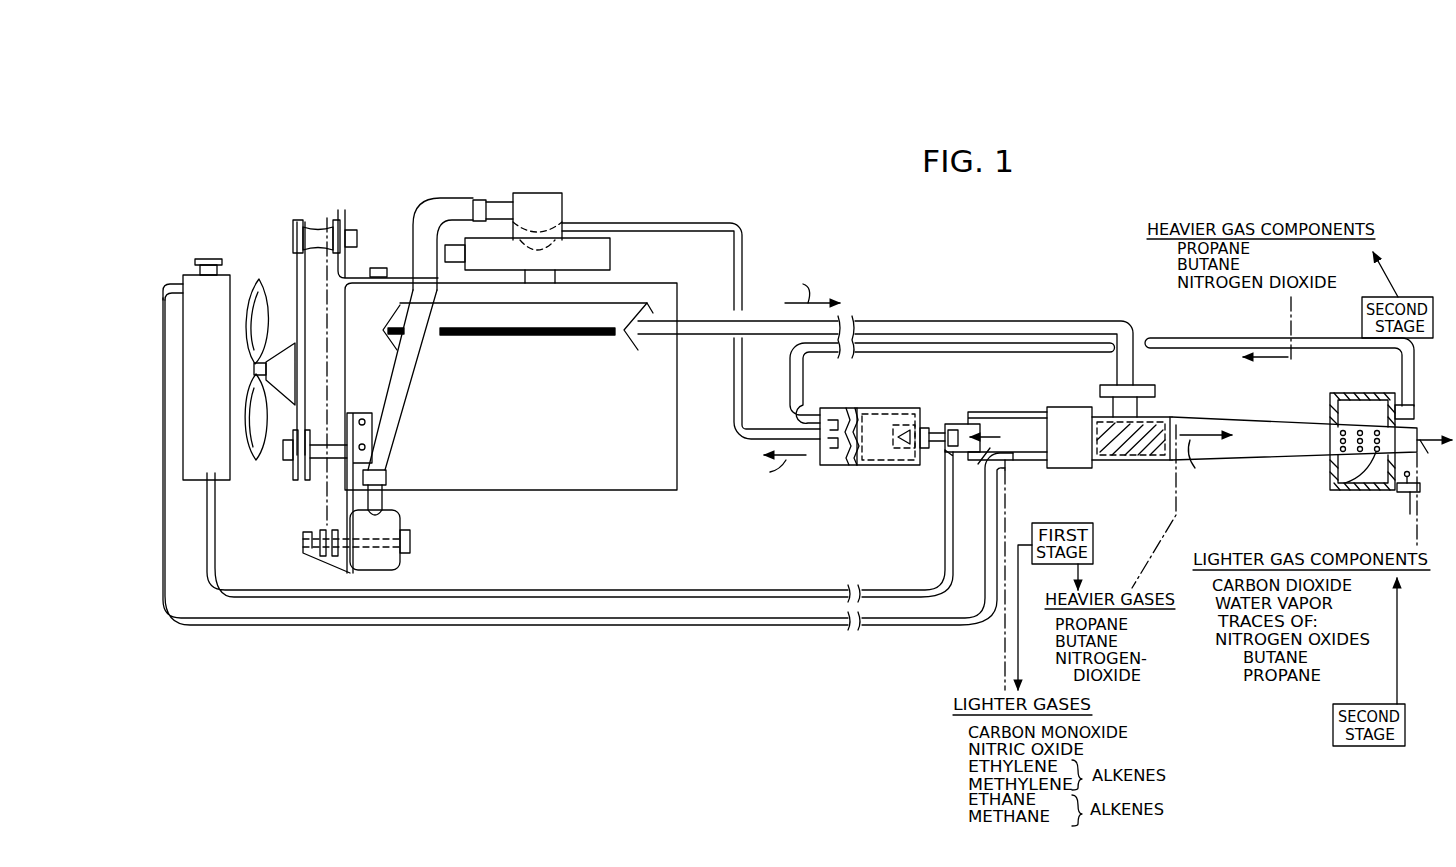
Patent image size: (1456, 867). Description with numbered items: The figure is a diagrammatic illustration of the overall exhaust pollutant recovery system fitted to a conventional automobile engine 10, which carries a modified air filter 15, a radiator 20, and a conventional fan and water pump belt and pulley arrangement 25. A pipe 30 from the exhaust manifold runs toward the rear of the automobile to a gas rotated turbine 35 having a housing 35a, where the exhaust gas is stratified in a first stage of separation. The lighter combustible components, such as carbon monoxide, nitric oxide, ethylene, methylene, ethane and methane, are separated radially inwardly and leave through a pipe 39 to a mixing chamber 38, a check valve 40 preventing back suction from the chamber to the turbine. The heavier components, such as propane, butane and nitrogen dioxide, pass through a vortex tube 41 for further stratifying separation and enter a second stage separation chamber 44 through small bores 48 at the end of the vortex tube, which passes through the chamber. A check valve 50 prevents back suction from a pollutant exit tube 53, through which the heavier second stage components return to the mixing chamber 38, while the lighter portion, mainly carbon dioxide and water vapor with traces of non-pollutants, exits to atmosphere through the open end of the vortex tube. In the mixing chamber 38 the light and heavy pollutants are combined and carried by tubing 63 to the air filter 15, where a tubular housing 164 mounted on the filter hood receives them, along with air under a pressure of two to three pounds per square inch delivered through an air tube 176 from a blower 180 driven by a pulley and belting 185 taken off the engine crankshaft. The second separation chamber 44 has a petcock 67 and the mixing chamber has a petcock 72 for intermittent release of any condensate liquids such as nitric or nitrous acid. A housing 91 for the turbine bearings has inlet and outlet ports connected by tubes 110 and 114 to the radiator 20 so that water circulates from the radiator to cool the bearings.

The automobile engine 10 is at (528, 452).
The air filter 15 is at (524, 185).
The radiator 20 is at (216, 370).
The fan and water pump belt and pulley arrangement 25 is at (265, 238).
The pipe 30 is at (937, 322).
The gas rotated turbine 35 is at (1148, 462).
The housing 35a is at (1160, 415).
The mixing chamber 38 is at (858, 378).
The pipe 39 is at (948, 424).
The check valve 40 is at (898, 422).
The vortex tube 41 is at (1257, 420).
The second stage separation chamber 44 is at (1381, 394).
The small bores 48 is at (1334, 480).
The check valve 50 is at (1418, 406).
The pollutant exit tube 53 is at (1277, 338).
The tubing 63 is at (745, 408).
The petcock 67 is at (1406, 502).
The petcock 72 is at (912, 466).
The housing 91 is at (1060, 470).
The tube 110 is at (903, 628).
The tube 114 is at (910, 590).
The tubular housing 164 is at (551, 187).
The air tube 176 is at (442, 198).
The blower 180 is at (398, 548).
The pulley and belting 185 is at (304, 501).